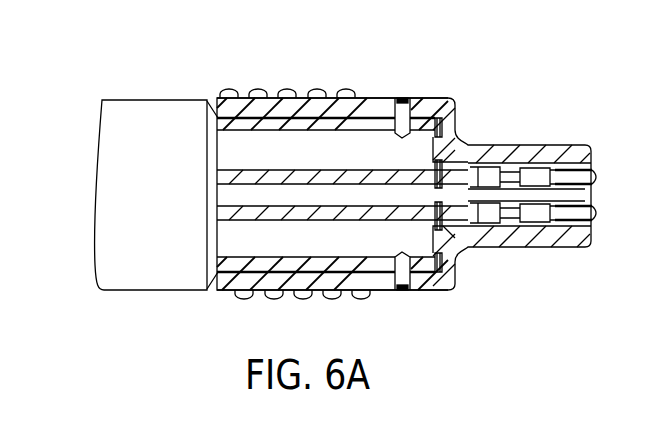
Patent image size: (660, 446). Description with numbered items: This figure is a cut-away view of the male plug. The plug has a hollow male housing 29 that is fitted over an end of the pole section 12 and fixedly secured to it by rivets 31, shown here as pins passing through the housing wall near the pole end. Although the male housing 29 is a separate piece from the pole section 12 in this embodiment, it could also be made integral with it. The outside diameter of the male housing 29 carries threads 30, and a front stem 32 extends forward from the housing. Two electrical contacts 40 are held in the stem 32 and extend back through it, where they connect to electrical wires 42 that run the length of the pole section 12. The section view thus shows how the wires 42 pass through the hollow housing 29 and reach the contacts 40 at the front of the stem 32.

The pole section 12 is at (158, 115).
The male housing 29 is at (400, 176).
The threads 30 is at (229, 90).
The rivets 31 is at (408, 276).
The front stem 32 is at (515, 144).
The electrical contacts 40 is at (592, 183).
The electrical wires 42 is at (289, 208).